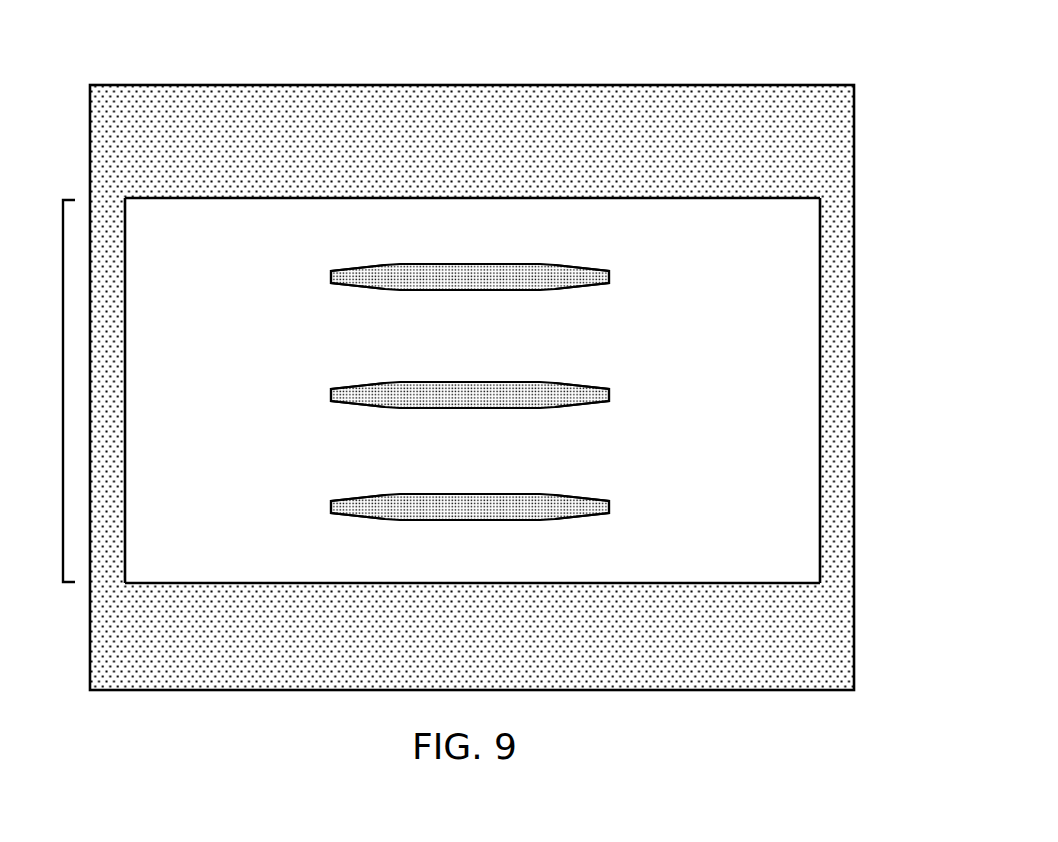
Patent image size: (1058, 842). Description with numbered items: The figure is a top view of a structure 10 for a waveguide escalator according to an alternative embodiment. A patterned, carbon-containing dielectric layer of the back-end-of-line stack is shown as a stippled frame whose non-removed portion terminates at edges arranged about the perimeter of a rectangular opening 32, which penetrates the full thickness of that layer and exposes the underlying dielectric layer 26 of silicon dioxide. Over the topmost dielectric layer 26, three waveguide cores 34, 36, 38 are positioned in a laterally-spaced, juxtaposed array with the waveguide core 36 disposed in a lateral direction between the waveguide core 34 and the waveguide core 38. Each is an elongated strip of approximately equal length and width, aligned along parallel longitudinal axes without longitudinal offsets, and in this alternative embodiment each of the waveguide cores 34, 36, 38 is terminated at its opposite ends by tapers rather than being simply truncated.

The structure 10 is at (122, 65).
The dielectric layer 26 is at (795, 395).
The opening 32 is at (63, 392).
The waveguide core 34 is at (630, 276).
The waveguide core 36 is at (636, 394).
The waveguide core 38 is at (636, 506).